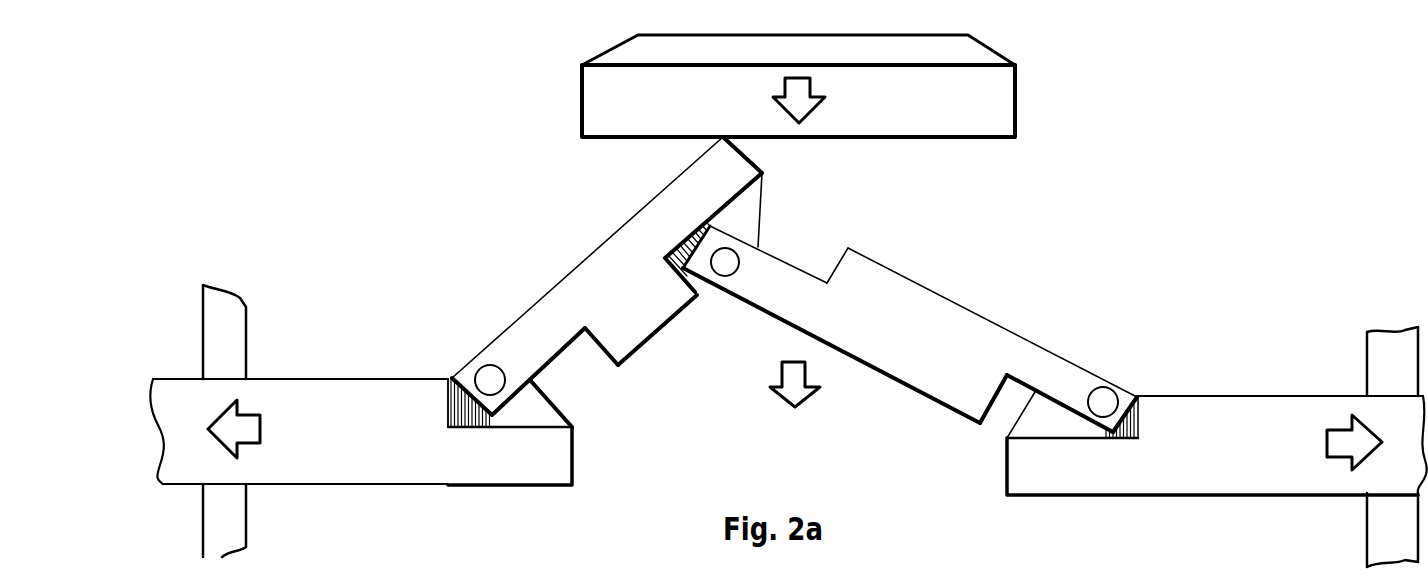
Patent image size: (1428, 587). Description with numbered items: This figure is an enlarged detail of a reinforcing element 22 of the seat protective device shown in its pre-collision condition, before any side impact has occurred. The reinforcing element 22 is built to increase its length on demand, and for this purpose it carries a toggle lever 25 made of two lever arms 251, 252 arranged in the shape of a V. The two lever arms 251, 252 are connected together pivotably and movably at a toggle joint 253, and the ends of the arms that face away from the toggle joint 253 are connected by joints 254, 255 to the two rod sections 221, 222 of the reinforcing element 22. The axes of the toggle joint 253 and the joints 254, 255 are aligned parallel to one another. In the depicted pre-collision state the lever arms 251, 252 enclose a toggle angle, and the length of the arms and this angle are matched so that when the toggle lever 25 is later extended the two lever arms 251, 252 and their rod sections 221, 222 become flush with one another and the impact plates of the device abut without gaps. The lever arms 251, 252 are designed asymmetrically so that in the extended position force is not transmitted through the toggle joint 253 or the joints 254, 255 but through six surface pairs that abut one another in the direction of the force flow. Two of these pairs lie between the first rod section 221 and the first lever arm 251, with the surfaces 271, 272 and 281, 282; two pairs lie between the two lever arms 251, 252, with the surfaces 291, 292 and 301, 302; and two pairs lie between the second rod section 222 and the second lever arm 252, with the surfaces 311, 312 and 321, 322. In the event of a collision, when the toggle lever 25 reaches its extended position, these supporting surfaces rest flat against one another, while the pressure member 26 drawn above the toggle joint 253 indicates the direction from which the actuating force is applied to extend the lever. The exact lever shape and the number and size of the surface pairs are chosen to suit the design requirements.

The reinforcing element 22 is at (385, 380).
The toggle lever 25 is at (870, 261).
The pressure plate 26 is at (1016, 113).
The rod section 221 is at (308, 398).
The rod section 222 is at (1220, 412).
The lever arm 251 is at (609, 263).
The lever arm 252 is at (905, 292).
The toggle joint 253 is at (740, 262).
The joint 254 is at (487, 366).
The joint 255 is at (1097, 386).
The surface 271 is at (447, 405).
The surface 272 is at (453, 423).
The surface 281 is at (574, 460).
The surface 282 is at (600, 350).
The surface 291 is at (762, 191).
The surface 292 is at (840, 262).
The surface 301 is at (705, 282).
The surface 302 is at (690, 232).
The surface 311 is at (1130, 442).
The surface 312 is at (1138, 418).
The surface 321 is at (995, 415).
The surface 322 is at (1007, 470).